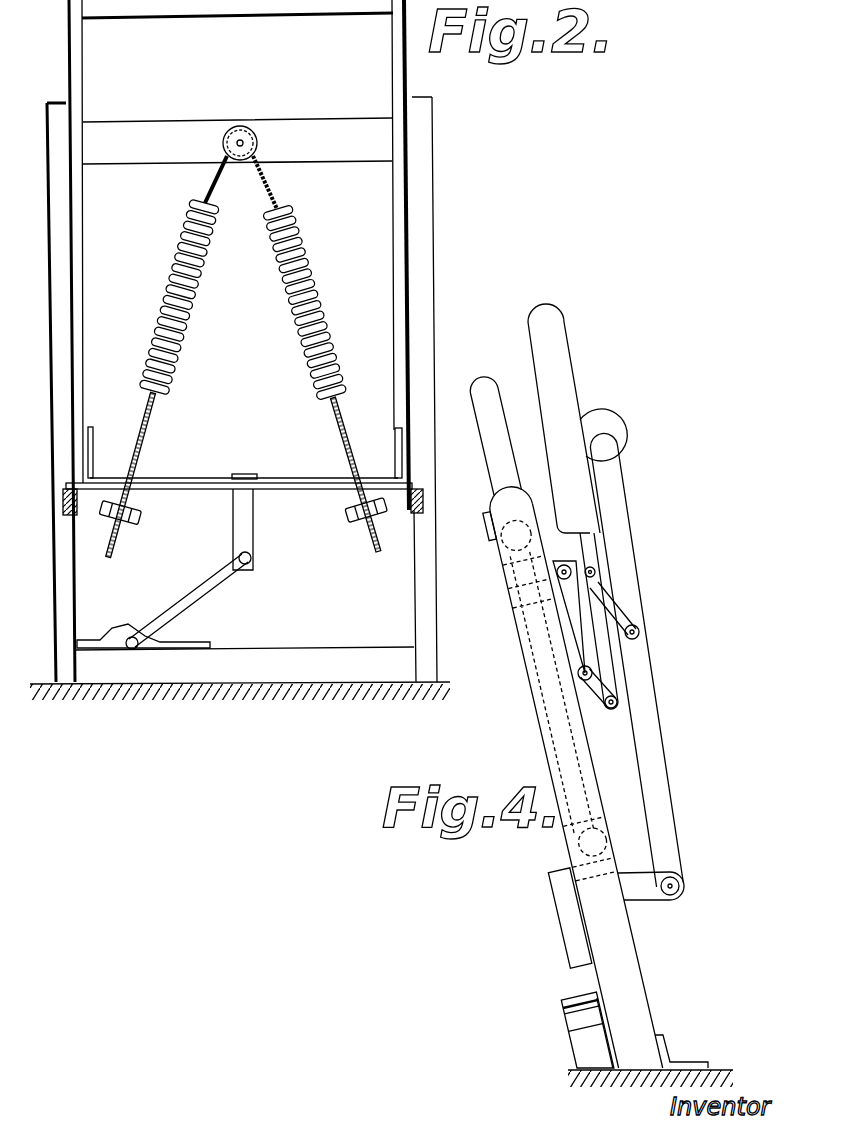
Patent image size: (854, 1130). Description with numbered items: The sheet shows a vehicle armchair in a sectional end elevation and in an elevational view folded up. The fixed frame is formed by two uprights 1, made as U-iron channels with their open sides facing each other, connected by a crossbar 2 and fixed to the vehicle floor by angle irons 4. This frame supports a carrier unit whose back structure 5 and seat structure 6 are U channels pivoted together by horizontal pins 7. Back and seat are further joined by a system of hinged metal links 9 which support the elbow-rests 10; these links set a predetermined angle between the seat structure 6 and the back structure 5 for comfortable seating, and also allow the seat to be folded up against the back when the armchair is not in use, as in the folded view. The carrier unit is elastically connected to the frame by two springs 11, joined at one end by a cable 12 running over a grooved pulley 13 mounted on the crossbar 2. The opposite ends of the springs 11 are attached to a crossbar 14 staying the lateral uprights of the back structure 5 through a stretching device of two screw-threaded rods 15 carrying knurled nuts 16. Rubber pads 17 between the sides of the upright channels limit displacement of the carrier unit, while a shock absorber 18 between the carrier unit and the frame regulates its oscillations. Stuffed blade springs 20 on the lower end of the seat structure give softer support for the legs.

In FIG. 4, the upright 1 is at (615, 960).
In FIG. 2, the crossbar 2 is at (140, 152).
In FIG. 4, the angle iron 4 is at (667, 1047).
In FIG. 4, the back structure 5 is at (572, 760).
In FIG. 4, the seat structure 6 is at (650, 742).
In FIG. 4, the horizontal pin 7 is at (677, 893).
In FIG. 4, the hinged metal link 9 is at (622, 587).
In FIG. 4, the elbow-rest 10 is at (558, 407).
In FIG. 2, the spring 11 is at (200, 292).
In FIG. 2, the cable 12 is at (270, 163).
In FIG. 2, the grooved pulley 13 is at (237, 128).
In FIG. 2, the crossbar 14 is at (292, 483).
In FIG. 2, the screw-threaded rod 15 is at (143, 450).
In FIG. 2, the knurled nut 16 is at (140, 515).
In FIG. 4, the rubber pad 17 is at (516, 632).
In FIG. 2, the shock absorber 18 is at (205, 585).
In FIG. 4, the stuffed blade spring 20 is at (602, 417).